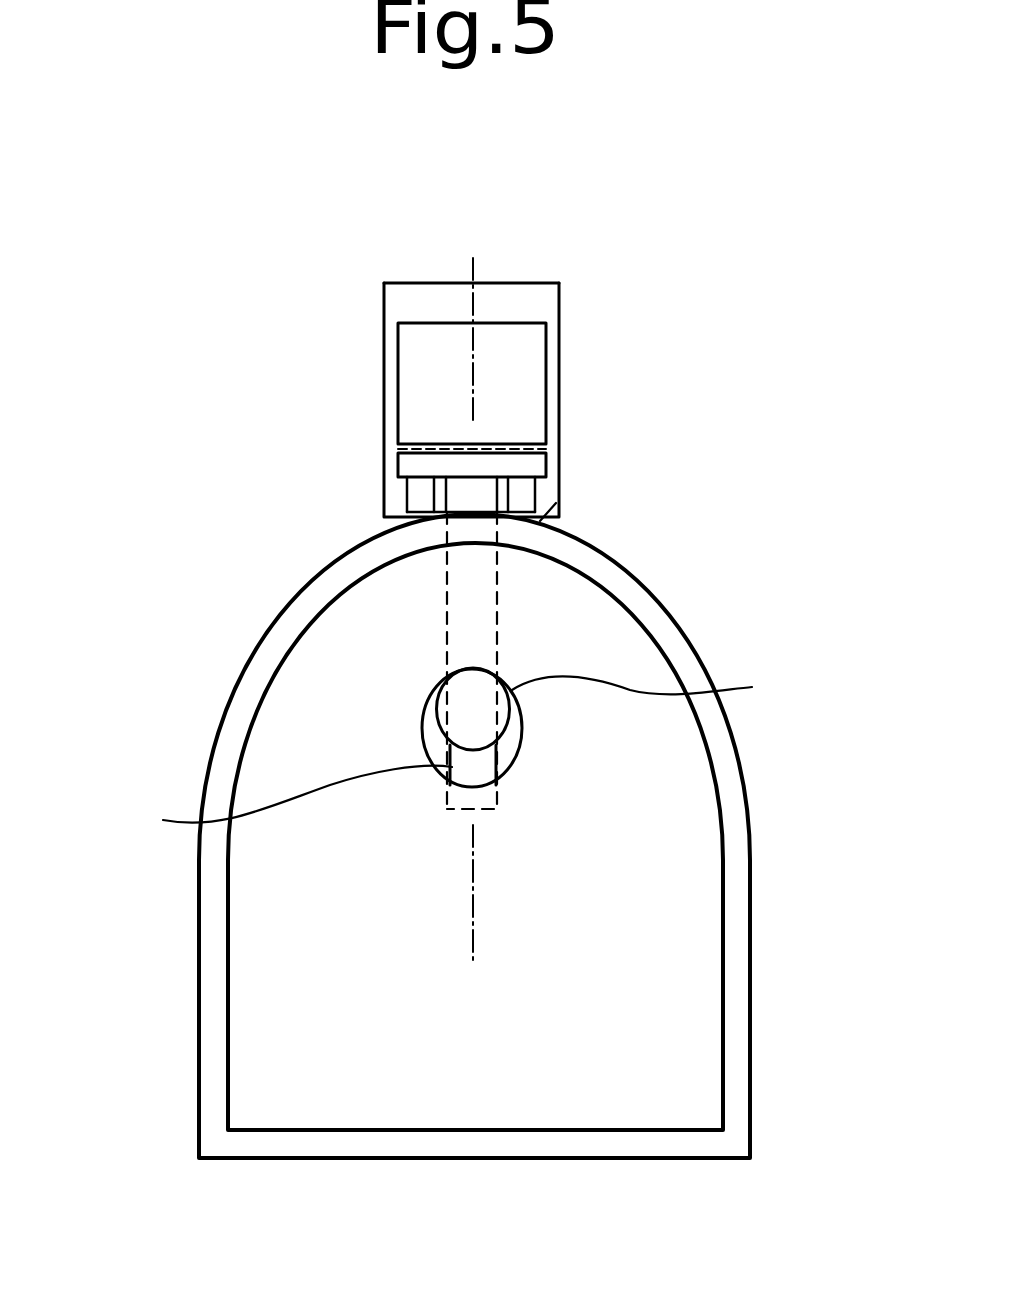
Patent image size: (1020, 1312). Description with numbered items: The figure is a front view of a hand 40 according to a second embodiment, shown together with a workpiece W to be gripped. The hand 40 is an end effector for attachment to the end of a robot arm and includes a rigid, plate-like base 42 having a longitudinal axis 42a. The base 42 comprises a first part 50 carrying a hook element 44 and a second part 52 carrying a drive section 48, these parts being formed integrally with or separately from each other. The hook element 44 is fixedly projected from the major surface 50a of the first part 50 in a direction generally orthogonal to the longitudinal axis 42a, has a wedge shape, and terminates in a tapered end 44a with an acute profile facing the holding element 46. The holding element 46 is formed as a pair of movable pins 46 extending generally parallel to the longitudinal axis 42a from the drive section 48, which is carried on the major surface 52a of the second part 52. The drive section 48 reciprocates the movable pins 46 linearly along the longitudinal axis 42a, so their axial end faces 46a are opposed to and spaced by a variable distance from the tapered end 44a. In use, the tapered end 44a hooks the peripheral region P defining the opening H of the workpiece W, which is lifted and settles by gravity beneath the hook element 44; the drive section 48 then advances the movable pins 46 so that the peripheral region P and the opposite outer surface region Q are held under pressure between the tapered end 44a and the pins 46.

The hand 40 is at (618, 392).
The base 42 is at (493, 607).
The longitudinal axis 42a is at (475, 936).
The hook element 44 is at (462, 718).
The tapered end 44a is at (474, 668).
The holding element 46 is at (418, 496).
The axial end faces 46a is at (420, 518).
The drive section 48 is at (423, 383).
The first part 50 is at (498, 801).
The major surface 50a is at (270, 803).
The second part 52 is at (528, 283).
The major surface 52a is at (412, 308).
The opening H is at (514, 768).
The peripheral region P is at (650, 688).
The outer surface region Q is at (556, 503).
The workpiece W is at (200, 977).